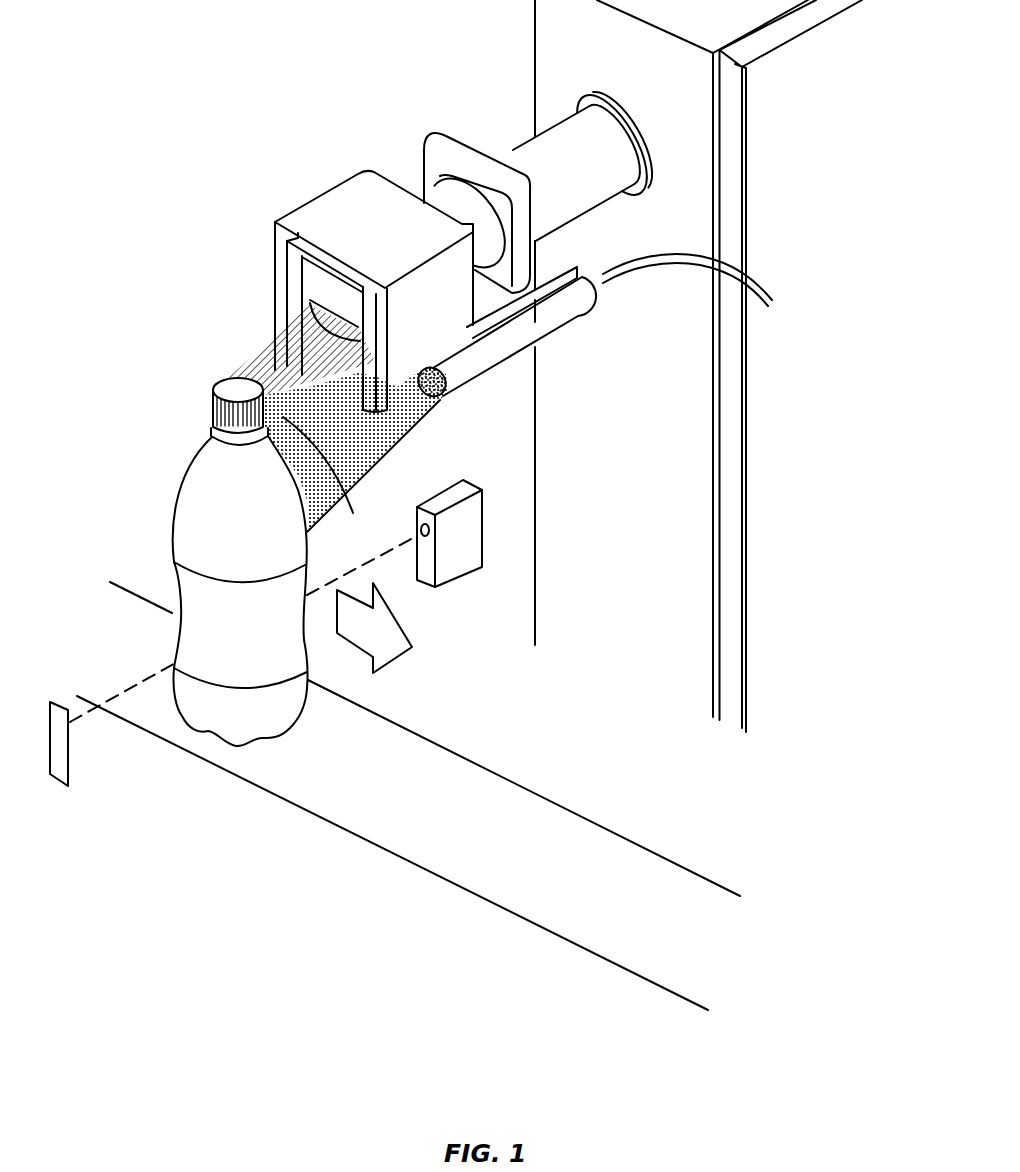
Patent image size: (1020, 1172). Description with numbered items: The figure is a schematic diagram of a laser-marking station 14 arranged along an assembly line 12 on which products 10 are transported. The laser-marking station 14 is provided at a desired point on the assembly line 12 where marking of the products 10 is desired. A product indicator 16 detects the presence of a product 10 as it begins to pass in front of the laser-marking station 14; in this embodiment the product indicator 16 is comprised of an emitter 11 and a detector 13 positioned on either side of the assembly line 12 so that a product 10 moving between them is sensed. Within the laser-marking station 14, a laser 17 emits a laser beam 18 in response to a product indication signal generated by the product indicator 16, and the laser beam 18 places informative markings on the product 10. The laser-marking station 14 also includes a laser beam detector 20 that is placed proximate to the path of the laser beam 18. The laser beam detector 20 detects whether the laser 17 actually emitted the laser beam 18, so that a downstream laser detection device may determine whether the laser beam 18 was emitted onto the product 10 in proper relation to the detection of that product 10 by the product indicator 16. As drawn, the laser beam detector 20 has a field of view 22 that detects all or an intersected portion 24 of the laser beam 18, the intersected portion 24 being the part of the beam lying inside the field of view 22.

The products 10 is at (192, 503).
The emitter 11 is at (452, 573).
The assembly line 12 is at (466, 759).
The detector 13 is at (63, 768).
The laser-marking station 14 is at (248, 98).
The product indicator 16 is at (508, 541).
The laser 17 is at (310, 305).
The laser beam 18 is at (262, 365).
The laser beam detector 20 is at (552, 314).
The field of view 22 is at (387, 427).
The intersected portion 24 is at (353, 513).